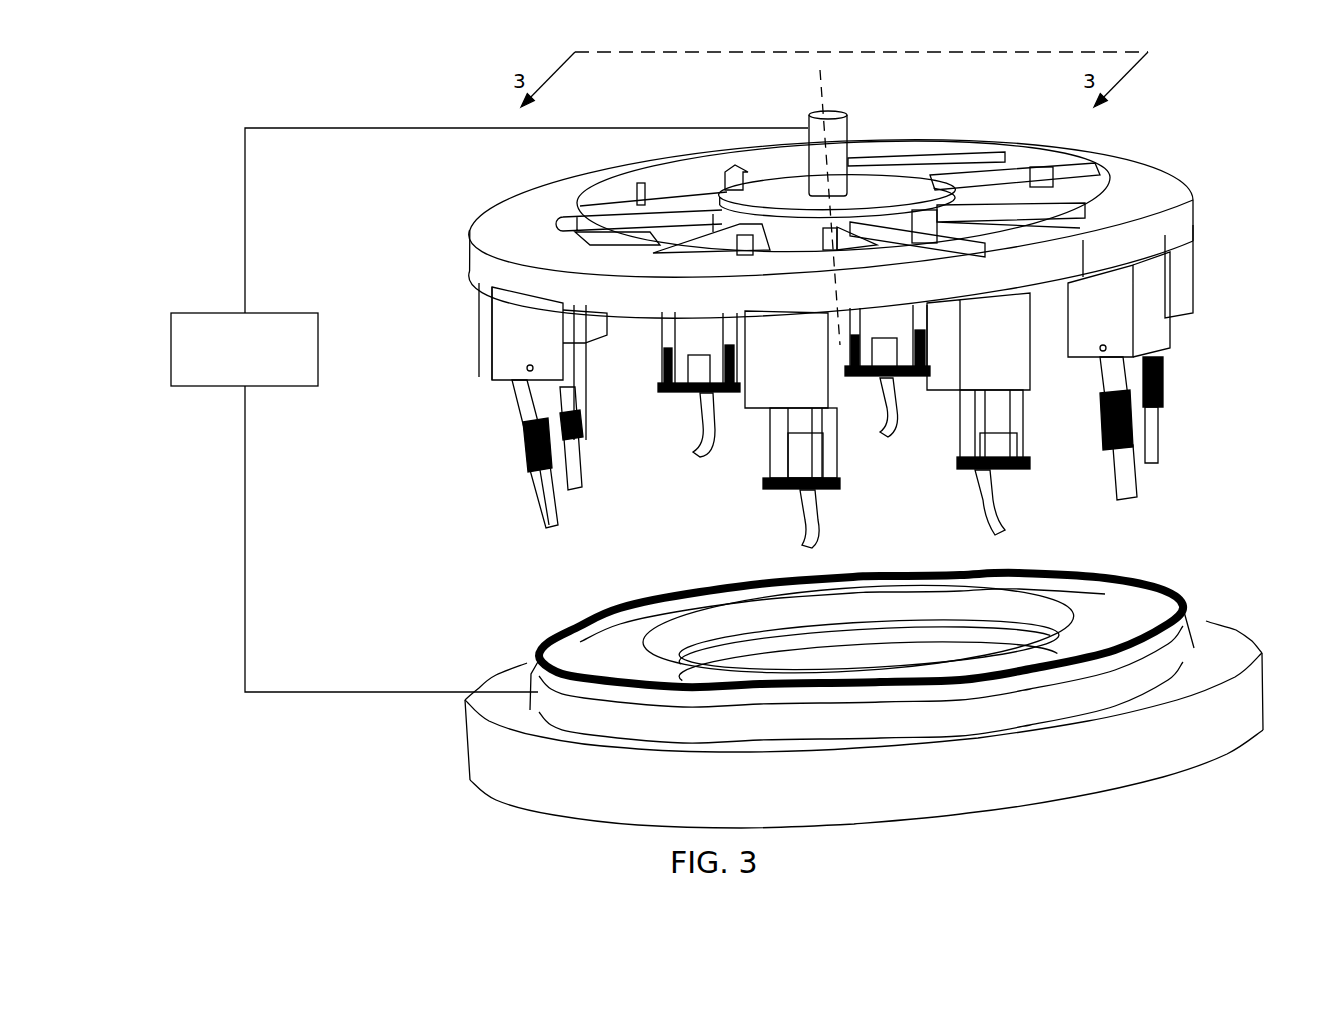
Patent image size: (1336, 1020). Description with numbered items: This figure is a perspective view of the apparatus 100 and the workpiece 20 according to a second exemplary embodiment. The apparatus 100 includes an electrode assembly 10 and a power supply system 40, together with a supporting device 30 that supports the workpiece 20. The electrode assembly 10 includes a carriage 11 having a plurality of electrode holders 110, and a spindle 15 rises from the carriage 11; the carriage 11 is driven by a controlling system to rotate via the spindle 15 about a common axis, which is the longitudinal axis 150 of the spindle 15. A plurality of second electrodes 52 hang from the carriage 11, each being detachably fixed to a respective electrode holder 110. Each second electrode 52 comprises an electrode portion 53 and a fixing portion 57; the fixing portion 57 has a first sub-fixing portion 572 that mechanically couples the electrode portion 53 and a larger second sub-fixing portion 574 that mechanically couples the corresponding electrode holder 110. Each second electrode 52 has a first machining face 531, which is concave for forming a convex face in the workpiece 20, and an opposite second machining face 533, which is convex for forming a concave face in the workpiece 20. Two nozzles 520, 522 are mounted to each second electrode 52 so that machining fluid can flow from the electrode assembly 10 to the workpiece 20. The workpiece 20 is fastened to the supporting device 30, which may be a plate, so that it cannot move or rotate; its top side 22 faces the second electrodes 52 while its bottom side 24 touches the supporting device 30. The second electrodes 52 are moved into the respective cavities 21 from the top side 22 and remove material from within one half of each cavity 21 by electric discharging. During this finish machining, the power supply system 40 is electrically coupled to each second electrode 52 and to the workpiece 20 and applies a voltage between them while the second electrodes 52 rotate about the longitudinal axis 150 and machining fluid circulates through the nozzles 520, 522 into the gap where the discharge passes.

The apparatus 100 is at (211, 114).
The electrode assembly 10 is at (1192, 166).
The carriage 11 is at (1118, 166).
The spindle 15 is at (837, 128).
The longitudinal axis 150 is at (822, 97).
The electrode holder 110 is at (480, 292).
The power supply system 40 is at (288, 313).
The second electrode 52 is at (368, 397).
The fixing portion 57 is at (418, 356).
The second sub-fixing portion 574 is at (510, 347).
The first sub-fixing portion 572 is at (533, 400).
The electrode portion 53 is at (540, 490).
The second machining face 533 is at (800, 522).
The first machining face 531 is at (808, 515).
The nozzle 520 is at (958, 465).
The nozzle 522 is at (1027, 455).
The workpiece 20 is at (1185, 596).
The cavity 21 is at (782, 690).
The top side 22 is at (560, 667).
The bottom side 24 is at (620, 735).
The supporting device 30 is at (1248, 630).